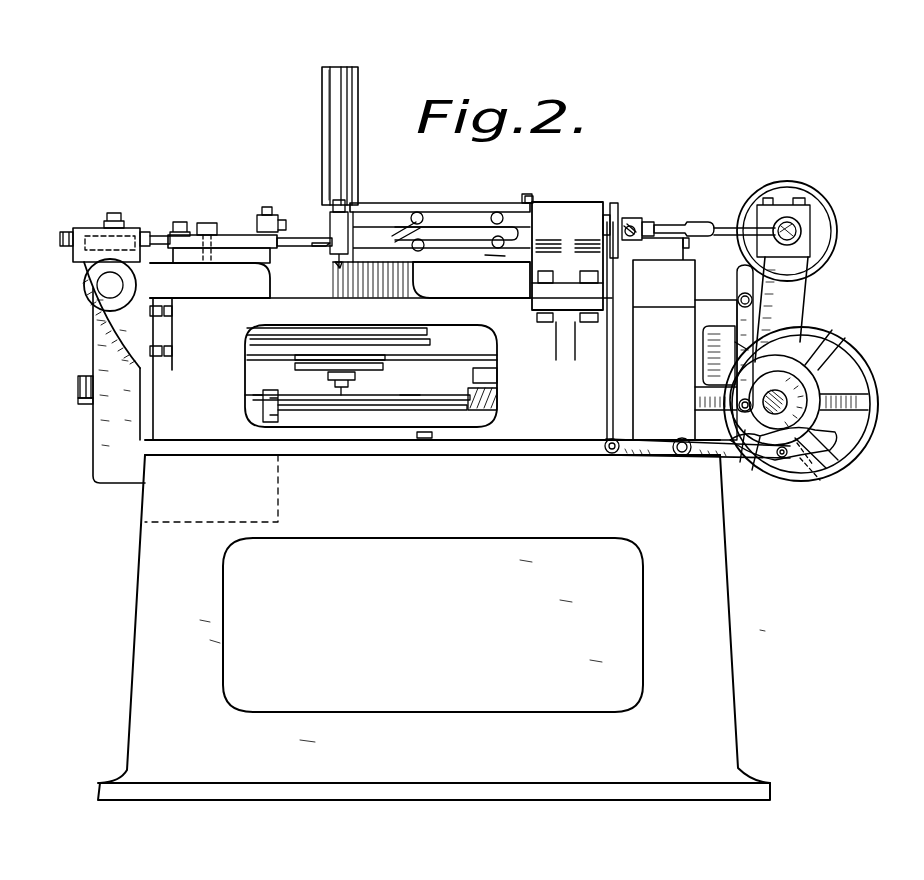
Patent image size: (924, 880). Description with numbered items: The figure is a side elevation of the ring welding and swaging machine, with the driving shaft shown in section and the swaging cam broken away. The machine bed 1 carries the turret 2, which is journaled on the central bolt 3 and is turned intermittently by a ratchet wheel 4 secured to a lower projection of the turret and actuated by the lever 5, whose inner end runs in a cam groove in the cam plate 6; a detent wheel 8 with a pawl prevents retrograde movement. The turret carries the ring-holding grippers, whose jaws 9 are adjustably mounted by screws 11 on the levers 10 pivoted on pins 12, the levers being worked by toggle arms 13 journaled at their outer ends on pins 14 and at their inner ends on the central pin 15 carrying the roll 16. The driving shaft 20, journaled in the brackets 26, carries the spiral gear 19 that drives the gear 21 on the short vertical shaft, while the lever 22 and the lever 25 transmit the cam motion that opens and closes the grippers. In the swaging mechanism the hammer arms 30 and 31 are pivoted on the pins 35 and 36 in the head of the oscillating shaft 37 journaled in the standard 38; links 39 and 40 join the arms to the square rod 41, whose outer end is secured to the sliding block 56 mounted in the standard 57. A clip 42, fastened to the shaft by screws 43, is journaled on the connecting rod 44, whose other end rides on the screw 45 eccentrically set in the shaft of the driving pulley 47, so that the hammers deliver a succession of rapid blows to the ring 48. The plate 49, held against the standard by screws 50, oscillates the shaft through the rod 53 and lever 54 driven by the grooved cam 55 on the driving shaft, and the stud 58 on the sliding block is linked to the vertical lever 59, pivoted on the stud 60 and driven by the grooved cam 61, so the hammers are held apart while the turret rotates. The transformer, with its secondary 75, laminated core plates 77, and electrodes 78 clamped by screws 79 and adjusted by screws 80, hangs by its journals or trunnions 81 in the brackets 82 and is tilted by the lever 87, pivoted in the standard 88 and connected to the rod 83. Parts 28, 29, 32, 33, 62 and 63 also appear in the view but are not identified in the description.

The machine bed 1 is at (434, 549).
The turret 2 is at (240, 263).
The central bolt 3 is at (341, 392).
The ratchet wheel 4 is at (312, 370).
The lever 5 is at (474, 356).
The cam plate 6 is at (473, 375).
The detent wheel 8 is at (295, 357).
The jaws 9 is at (160, 236).
The levers 10 is at (222, 248).
The screws 11 is at (184, 222).
The pins 12 is at (208, 223).
The toggle arms 13 is at (290, 246).
The pins 14 is at (257, 220).
The pin 15 is at (267, 207).
The roll 16 is at (283, 220).
The spiral gear 19 is at (872, 372).
The driving shaft 20 is at (784, 398).
The gear 21 is at (468, 397).
The lever 22 is at (532, 198).
The lever 25 is at (468, 203).
The brackets 26 is at (805, 283).
The bracket 28 is at (330, 212).
The link 29 is at (395, 232).
The hammer arm 30 is at (492, 212).
The hammer arm 31 is at (462, 245).
The nut 32 is at (339, 200).
The pointer 33 is at (337, 265).
The pin 35 is at (526, 194).
The pin 36 is at (500, 248).
The oscillating shaft 37 is at (640, 218).
The standard 38 is at (570, 215).
The link 39 is at (420, 251).
The link 40 is at (395, 290).
The square rod 41 is at (486, 258).
The clip 42 is at (690, 225).
The screws 43 is at (652, 218).
The connecting rod 44 is at (725, 228).
The screw 45 is at (801, 233).
The driving pulley 47 is at (780, 182).
The ring 48 is at (318, 243).
The plate 49 is at (614, 203).
The screws 50 is at (620, 210).
The rod 53 is at (613, 400).
The lever 54 is at (705, 460).
The grooved cam 55 is at (835, 437).
The sliding block 56 is at (682, 250).
The standard 57 is at (648, 262).
The stud 58 is at (737, 275).
The vertical lever 59 is at (755, 330).
The stud 60 is at (752, 300).
The grooved cam 61 is at (803, 378).
The column 62 is at (335, 93).
The column groove 63 is at (322, 112).
The secondary 75 is at (93, 359).
The laminated core plates 77 is at (245, 397).
The electrodes 78 is at (144, 232).
The screws 79 is at (112, 213).
The screws 80 is at (60, 241).
The journals or trunnions 81 is at (106, 269).
The brackets 82 is at (97, 318).
The rod 83 is at (410, 393).
The lever 87 is at (78, 385).
The standard 88 is at (78, 403).